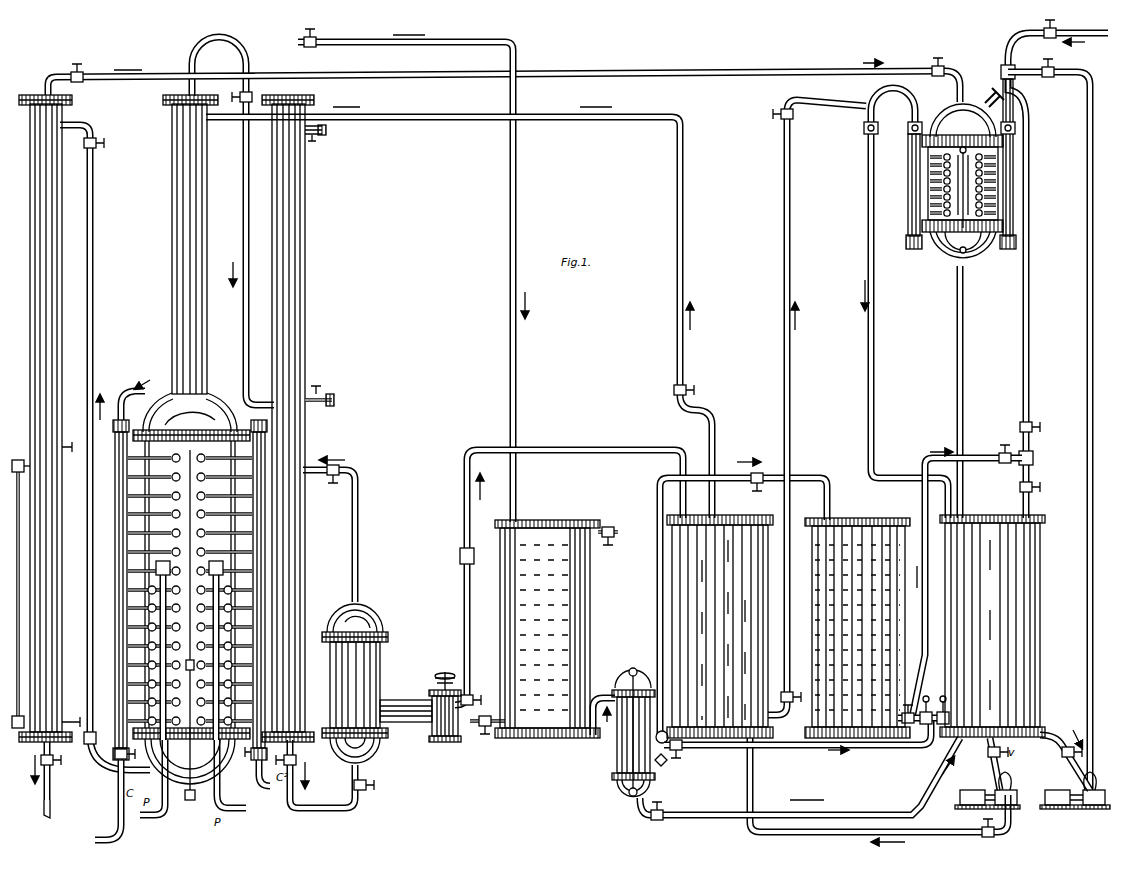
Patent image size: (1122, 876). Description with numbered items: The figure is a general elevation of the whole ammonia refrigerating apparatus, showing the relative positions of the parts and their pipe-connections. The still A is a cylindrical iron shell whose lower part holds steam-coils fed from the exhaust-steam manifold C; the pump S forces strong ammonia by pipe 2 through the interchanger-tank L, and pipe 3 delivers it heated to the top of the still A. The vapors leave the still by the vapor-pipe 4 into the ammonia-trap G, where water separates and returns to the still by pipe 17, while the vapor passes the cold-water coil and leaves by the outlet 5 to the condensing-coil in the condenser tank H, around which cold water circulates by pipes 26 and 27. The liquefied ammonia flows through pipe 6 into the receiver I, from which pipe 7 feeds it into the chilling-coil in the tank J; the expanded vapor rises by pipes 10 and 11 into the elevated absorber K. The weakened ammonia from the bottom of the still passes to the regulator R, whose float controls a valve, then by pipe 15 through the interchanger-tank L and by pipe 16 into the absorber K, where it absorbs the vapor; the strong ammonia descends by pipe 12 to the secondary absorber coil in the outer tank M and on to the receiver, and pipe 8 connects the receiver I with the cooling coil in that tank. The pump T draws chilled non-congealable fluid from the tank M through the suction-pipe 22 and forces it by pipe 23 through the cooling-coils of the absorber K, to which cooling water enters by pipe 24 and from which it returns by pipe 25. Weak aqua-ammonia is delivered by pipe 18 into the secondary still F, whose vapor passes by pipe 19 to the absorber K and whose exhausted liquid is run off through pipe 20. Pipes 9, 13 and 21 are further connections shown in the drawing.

The pipe 2 is at (879, 794).
The pipe 3 is at (459, 310).
The vapor-pipe 4 is at (233, 221).
The outlet-pipe 5 is at (414, 275).
The pipe 6 is at (604, 707).
The pipe 7 is at (737, 617).
The pipe 8 is at (797, 740).
The pipe 9 is at (929, 711).
The pipe 10 is at (967, 580).
The pipe 11 is at (1054, 275).
The pipe 12 is at (972, 391).
The pipe 13 is at (340, 530).
The pipe 15 is at (594, 568).
The pipe 16 is at (815, 410).
The pipe 17 is at (325, 774).
The pipe 18 is at (105, 446).
The pipe 19 is at (504, 80).
The pipe 20 is at (51, 780).
The pipe 21 is at (808, 779).
The suction-pipe 22 is at (1065, 760).
The pipe 23 is at (1061, 419).
The pipe 24 is at (1074, 29).
The pipe 25 is at (909, 303).
The pipe 26 is at (616, 539).
The pipe 27 is at (487, 727).
The still A is at (190, 447).
The manifold C is at (190, 570).
The secondary still F is at (45, 418).
The ammonia-trap G is at (309, 418).
The condenser tank H is at (547, 620).
The receiver I is at (632, 728).
The tank J is at (857, 620).
The absorber K is at (961, 166).
The interchanger-tank L is at (720, 620).
The outer tank M is at (992, 619).
The regulator R is at (391, 683).
The pump S is at (988, 790).
The pump T is at (1077, 790).